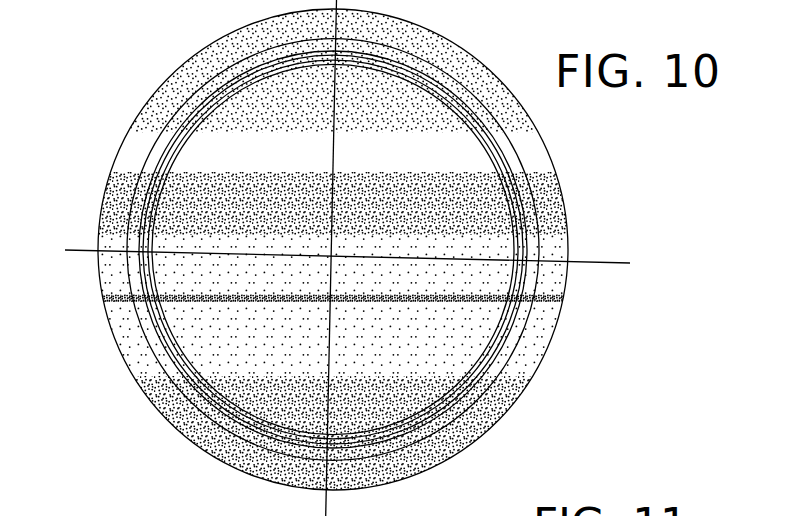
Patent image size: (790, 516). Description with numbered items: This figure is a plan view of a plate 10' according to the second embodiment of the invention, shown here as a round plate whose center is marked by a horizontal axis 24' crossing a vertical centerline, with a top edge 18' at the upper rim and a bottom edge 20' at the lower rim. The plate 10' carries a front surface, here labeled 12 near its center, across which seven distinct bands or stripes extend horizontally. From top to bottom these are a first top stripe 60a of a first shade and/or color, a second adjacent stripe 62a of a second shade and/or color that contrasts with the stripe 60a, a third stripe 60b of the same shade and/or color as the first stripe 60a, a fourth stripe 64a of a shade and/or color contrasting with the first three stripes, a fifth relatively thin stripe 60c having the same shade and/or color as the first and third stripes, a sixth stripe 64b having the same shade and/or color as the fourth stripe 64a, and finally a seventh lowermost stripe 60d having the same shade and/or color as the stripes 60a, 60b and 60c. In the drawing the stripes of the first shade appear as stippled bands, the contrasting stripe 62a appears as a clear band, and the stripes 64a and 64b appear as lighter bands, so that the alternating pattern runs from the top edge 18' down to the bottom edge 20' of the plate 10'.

The plate 10' is at (389, 117).
The substrate 12 is at (366, 284).
The top edge 18' is at (333, 249).
The bottom edge 20' is at (333, 288).
The horizontal axis 24' is at (322, 258).
The first top stripe 60a is at (525, 110).
The third stripe 60b is at (565, 222).
The fifth relatively thin stripe 60c is at (563, 302).
The seventh lowermost stripe 60d is at (492, 423).
The second adjacent stripe 62a is at (537, 167).
The fourth stripe 64a is at (553, 280).
The sixth stripe 64b is at (540, 342).